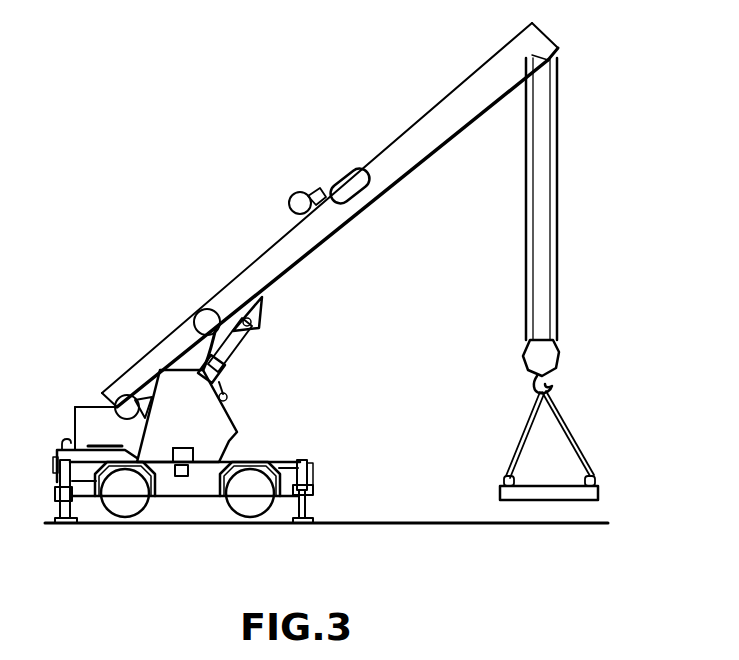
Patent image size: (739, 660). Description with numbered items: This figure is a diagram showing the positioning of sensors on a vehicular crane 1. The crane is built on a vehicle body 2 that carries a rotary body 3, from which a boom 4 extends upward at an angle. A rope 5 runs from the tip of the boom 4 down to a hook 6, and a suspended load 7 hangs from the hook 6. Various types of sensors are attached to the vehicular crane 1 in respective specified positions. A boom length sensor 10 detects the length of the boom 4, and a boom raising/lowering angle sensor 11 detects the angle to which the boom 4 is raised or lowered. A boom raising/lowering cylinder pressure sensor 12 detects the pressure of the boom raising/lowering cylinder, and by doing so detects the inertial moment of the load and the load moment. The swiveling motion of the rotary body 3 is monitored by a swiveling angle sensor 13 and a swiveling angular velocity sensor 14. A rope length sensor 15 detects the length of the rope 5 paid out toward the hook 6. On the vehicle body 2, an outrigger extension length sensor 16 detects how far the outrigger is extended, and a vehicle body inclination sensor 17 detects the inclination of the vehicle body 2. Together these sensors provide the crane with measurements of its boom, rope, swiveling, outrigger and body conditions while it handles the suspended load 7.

The vehicular crane 1 is at (130, 258).
The vehicle body 2 is at (207, 488).
The rotary body 3 is at (230, 438).
The boom 4 is at (388, 163).
The rope 5 is at (558, 118).
The hook 6 is at (545, 357).
The suspended load 7 is at (560, 485).
The boom length sensor 10 is at (207, 320).
The boom raising/lowering angle sensor 11 is at (124, 398).
The boom raising/lowering cylinder pressure sensor 12 is at (225, 377).
The swiveling angle sensor 13 is at (187, 443).
The swiveling angular velocity sensor 14 is at (187, 443).
The rope length sensor 15 is at (290, 196).
The outrigger extension length sensor 16 is at (315, 478).
The vehicle body inclination sensor 17 is at (180, 478).